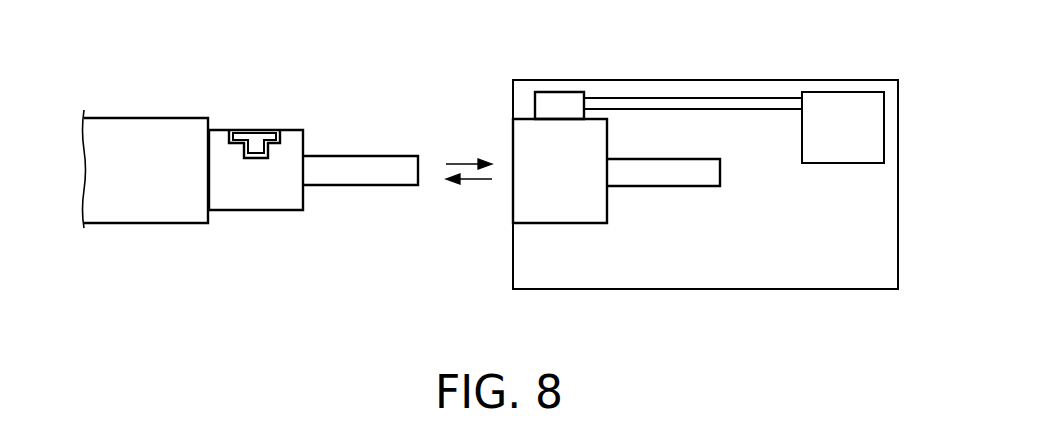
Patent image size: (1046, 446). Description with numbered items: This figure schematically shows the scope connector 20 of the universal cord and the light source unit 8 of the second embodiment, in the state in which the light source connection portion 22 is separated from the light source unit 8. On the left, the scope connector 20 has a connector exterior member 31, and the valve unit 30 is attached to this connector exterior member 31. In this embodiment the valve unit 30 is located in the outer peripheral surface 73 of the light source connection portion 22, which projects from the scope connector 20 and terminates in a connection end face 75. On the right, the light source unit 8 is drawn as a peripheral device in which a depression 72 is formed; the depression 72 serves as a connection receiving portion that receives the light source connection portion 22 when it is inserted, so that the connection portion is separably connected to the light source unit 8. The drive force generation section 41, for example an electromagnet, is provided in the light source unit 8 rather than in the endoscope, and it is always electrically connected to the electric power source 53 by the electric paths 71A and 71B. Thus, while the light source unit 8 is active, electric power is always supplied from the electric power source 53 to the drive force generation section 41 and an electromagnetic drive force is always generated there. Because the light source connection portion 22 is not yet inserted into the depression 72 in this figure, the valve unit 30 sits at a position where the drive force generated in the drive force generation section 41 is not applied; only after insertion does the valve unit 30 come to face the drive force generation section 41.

The light source unit 8 is at (710, 268).
The scope connector 20 is at (125, 137).
The light source connection portion 22 is at (256, 210).
The valve unit 30 is at (261, 131).
The connector exterior member 31 is at (175, 128).
The drive force generation section 41 is at (560, 97).
The electric power source 53 is at (844, 92).
The electric path 71A is at (676, 97).
The electric path 71B is at (757, 110).
The depression 72 is at (530, 222).
The outer peripheral surface 73 is at (222, 130).
The connection end face 75 is at (303, 136).